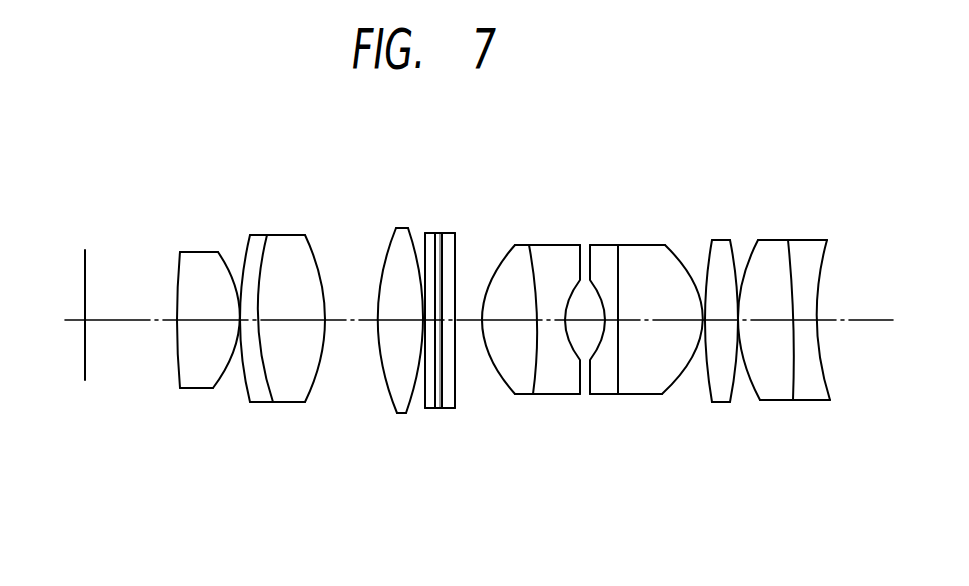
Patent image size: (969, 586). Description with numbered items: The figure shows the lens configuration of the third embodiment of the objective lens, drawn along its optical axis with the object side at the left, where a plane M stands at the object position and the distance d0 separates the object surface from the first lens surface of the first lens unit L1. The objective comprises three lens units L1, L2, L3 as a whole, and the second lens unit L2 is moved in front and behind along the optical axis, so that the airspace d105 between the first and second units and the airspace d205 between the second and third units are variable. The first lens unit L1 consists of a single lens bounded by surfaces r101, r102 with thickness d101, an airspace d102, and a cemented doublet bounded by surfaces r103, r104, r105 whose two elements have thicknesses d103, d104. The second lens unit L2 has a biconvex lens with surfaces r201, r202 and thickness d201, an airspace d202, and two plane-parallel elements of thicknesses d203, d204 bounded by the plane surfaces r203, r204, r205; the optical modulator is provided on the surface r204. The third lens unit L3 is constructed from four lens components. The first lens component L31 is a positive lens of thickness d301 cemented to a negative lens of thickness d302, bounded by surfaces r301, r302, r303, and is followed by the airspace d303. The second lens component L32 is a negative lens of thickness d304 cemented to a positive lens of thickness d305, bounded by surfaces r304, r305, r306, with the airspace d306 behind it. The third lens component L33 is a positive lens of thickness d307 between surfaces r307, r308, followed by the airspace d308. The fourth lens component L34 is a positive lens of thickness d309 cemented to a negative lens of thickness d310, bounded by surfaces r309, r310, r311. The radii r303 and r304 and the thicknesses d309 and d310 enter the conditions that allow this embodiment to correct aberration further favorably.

The mirror / image plane M is at (88, 362).
The distance between the object surface and the first lens surface d0 is at (135, 318).
The first lens unit L1 is at (318, 504).
The second lens unit L2 is at (468, 505).
The third lens unit L3 is at (497, 500).
The first lens component L31 is at (590, 142).
The second lens component L32 is at (683, 142).
The third lens component L33 is at (743, 142).
The fourth lens component L34 is at (842, 142).
The radius of curvature of lens surface r101 is at (180, 355).
The radius of curvature of lens surface r102 is at (226, 380).
The radius of curvature of lens surface r103 is at (250, 392).
The radius of curvature of lens surface r104 is at (274, 390).
The radius of curvature of lens surface r105 is at (309, 394).
The radius of curvature of lens surface r201 is at (391, 392).
The radius of curvature of lens surface r202 is at (420, 400).
The radius of curvature of lens surface r203 is at (426, 402).
The radius of curvature of lens surface r204 is at (442, 404).
The radius of curvature of lens surface r205 is at (458, 400).
The radius of curvature of lens surface r301 is at (505, 383).
The radius of curvature of lens surface r302 is at (531, 394).
The radius of curvature of third surface of first lens component r303 is at (575, 385).
The radius of curvature of first surface of second lens component r304 is at (597, 395).
The radius of curvature of lens surface r305 is at (624, 394).
The radius of curvature of lens surface r306 is at (668, 385).
The radius of curvature of lens surface r307 is at (712, 385).
The radius of curvature of lens surface r308 is at (738, 382).
The radius of curvature of lens surface r309 is at (765, 385).
The radius of curvature of lens surface r310 is at (789, 385).
The radius of curvature of lens surface r311 is at (819, 382).
The lens thickness d101 is at (205, 318).
The airspace d102 is at (240, 317).
The lens thickness d103 is at (268, 263).
The lens thickness d104 is at (283, 318).
The airspace d105 is at (347, 317).
The lens thickness d201 is at (380, 313).
The airspace d202 is at (424, 313).
The lens thickness d203 is at (441, 313).
The lens thickness d204 is at (448, 313).
The airspace d205 is at (473, 313).
The lens thickness d301 is at (505, 320).
The lens thickness d302 is at (548, 320).
The airspace d303 is at (567, 320).
The lens thickness d304 is at (613, 320).
The lens thickness d305 is at (641, 320).
The airspace d306 is at (702, 317).
The lens thickness d307 is at (722, 317).
The airspace d308 is at (738, 317).
The thickness of the positive lens of the fourth lens component d309 is at (775, 317).
The thickness of the negative lens of the fourth lens component d310 is at (803, 317).